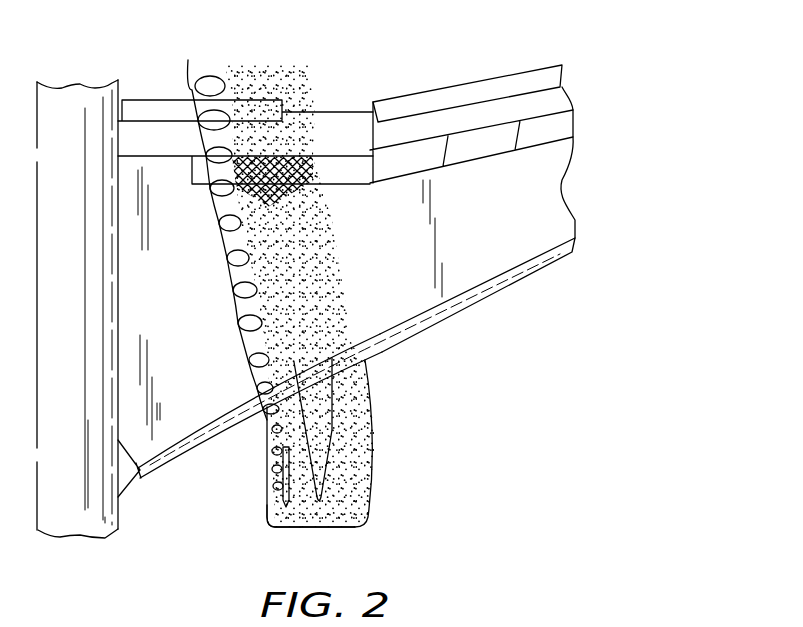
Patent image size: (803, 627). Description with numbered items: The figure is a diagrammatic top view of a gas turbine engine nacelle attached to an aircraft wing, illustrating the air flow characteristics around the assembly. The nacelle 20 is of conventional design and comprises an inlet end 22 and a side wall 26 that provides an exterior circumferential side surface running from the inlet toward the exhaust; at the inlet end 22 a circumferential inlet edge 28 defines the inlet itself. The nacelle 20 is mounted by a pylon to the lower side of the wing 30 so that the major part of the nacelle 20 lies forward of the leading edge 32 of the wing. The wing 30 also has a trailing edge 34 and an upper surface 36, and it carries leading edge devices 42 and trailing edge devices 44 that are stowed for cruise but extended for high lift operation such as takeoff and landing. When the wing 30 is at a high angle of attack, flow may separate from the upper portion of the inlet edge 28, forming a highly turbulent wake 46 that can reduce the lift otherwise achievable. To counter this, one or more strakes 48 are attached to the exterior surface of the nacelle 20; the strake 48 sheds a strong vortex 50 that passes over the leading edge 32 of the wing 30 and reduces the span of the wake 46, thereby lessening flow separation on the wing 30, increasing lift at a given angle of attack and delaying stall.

The nacelle 20 is at (347, 467).
The inlet end 22 is at (347, 528).
The side wall 26 is at (375, 425).
The inlet edge 28 is at (297, 528).
The wing 30 is at (484, 237).
The leading edge 32 is at (558, 268).
The trailing edge 34 is at (537, 68).
The upper surface 36 is at (515, 211).
The leading edge devices 42 is at (175, 455).
The trailing edge devices 44 is at (453, 97).
The wake 46 is at (312, 272).
The strake 48 is at (273, 500).
The vortex 50 is at (230, 310).